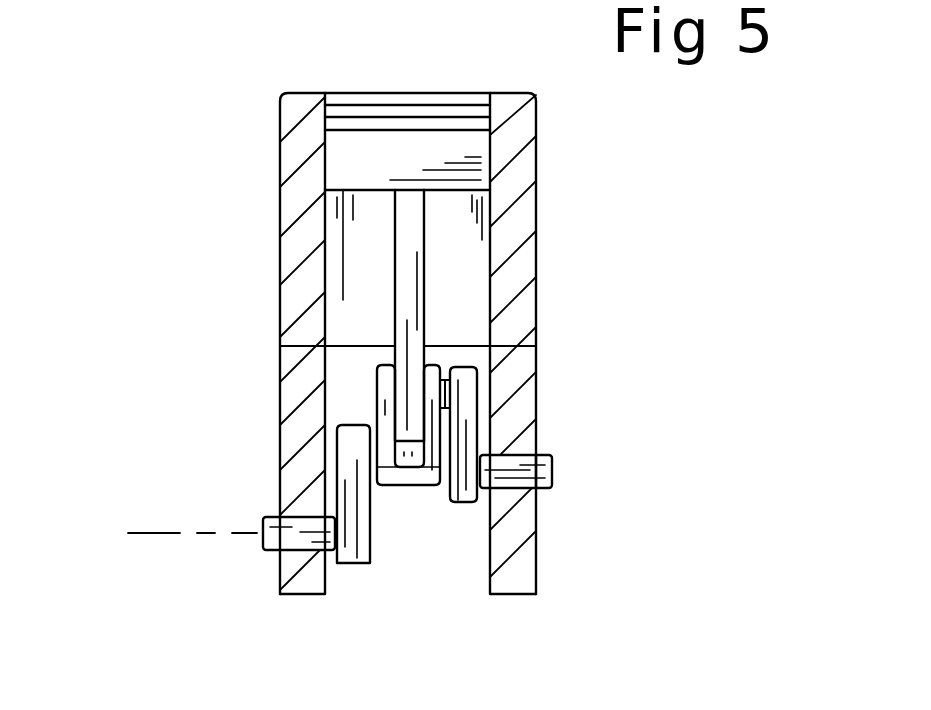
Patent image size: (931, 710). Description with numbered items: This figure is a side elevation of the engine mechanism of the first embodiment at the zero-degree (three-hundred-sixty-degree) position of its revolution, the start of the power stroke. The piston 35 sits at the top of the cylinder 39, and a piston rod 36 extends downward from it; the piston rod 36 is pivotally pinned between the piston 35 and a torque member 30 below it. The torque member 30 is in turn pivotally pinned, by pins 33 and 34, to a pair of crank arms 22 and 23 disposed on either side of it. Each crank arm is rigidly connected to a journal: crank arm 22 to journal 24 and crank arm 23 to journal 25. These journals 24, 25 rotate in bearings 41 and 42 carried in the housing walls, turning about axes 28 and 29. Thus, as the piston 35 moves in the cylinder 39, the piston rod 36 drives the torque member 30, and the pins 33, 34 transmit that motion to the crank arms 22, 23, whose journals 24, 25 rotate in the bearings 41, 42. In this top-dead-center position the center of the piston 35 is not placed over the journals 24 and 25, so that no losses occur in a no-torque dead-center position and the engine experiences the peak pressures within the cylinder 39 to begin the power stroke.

The crank arm 22 is at (463, 417).
The crank arm 23 is at (355, 497).
The journal 24 is at (532, 490).
The journal 25 is at (315, 533).
The axis 28 is at (562, 467).
The axis 29 is at (138, 533).
The torque member 30 is at (404, 477).
The pin 33 is at (370, 450).
The pin 34 is at (450, 392).
The piston 35 is at (363, 152).
The piston rod 36 is at (407, 238).
The cylinder 39 is at (370, 308).
The bearing 41 is at (308, 583).
The bearing 42 is at (518, 567).